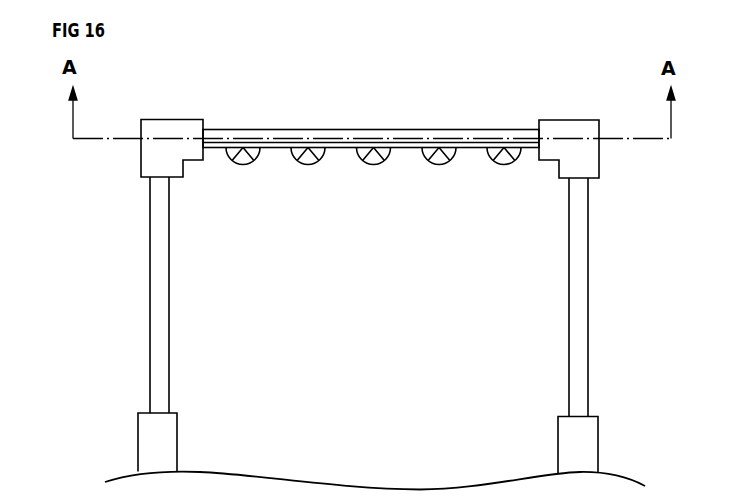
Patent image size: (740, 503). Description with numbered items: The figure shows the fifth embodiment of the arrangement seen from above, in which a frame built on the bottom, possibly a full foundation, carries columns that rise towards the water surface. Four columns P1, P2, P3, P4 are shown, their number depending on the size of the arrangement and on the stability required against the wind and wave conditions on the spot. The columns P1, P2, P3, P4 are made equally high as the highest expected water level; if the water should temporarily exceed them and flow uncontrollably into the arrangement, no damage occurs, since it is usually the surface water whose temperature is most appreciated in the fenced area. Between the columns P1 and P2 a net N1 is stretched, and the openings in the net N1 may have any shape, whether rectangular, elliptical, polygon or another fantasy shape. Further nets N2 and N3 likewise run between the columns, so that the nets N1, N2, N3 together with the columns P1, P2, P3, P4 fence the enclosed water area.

The column P1 is at (162, 120).
The column P2 is at (565, 120).
The net N1 is at (323, 130).
The net N2 is at (588, 303).
The net N3 is at (150, 295).
The column P3 is at (598, 447).
The column P4 is at (138, 443).